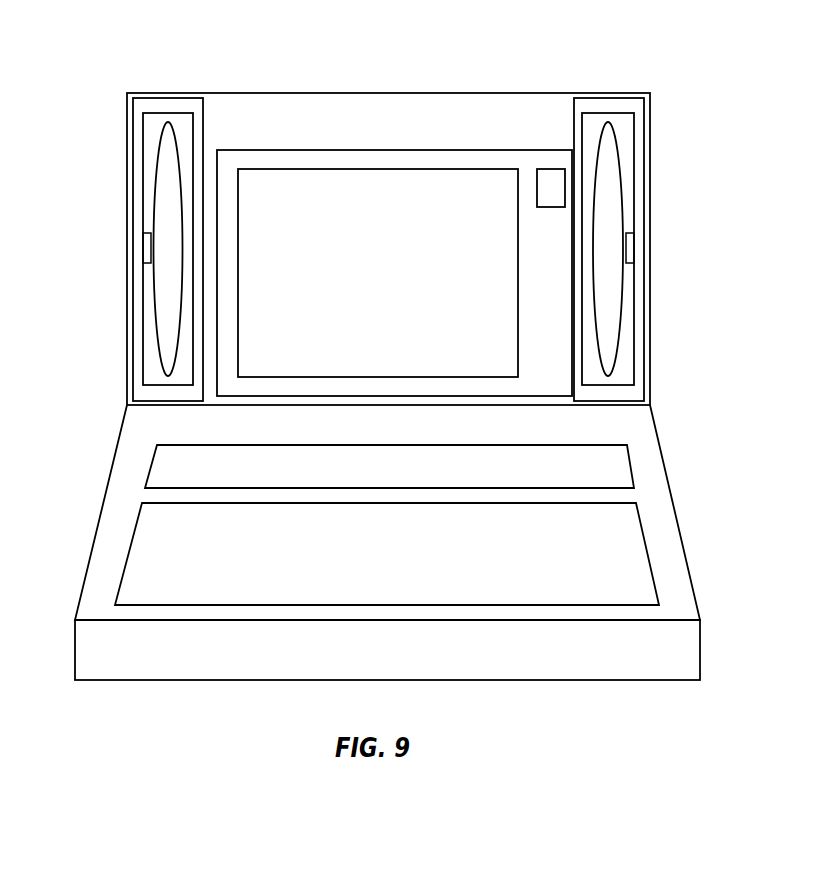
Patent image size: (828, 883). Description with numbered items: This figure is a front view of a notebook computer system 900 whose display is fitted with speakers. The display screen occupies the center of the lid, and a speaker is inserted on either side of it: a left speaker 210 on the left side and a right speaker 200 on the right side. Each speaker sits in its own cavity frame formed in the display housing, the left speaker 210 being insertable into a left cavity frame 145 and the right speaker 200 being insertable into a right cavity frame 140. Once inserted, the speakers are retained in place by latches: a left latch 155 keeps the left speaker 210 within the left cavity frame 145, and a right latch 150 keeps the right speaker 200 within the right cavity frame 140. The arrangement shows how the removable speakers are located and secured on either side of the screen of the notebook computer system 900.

The notebook computer system 900 is at (665, 51).
The right cavity frame 140 is at (633, 345).
The left cavity frame 145 is at (138, 375).
The right latch 150 is at (628, 250).
The left latch 155 is at (147, 250).
The right speaker 200 is at (622, 371).
The left speaker 210 is at (154, 371).